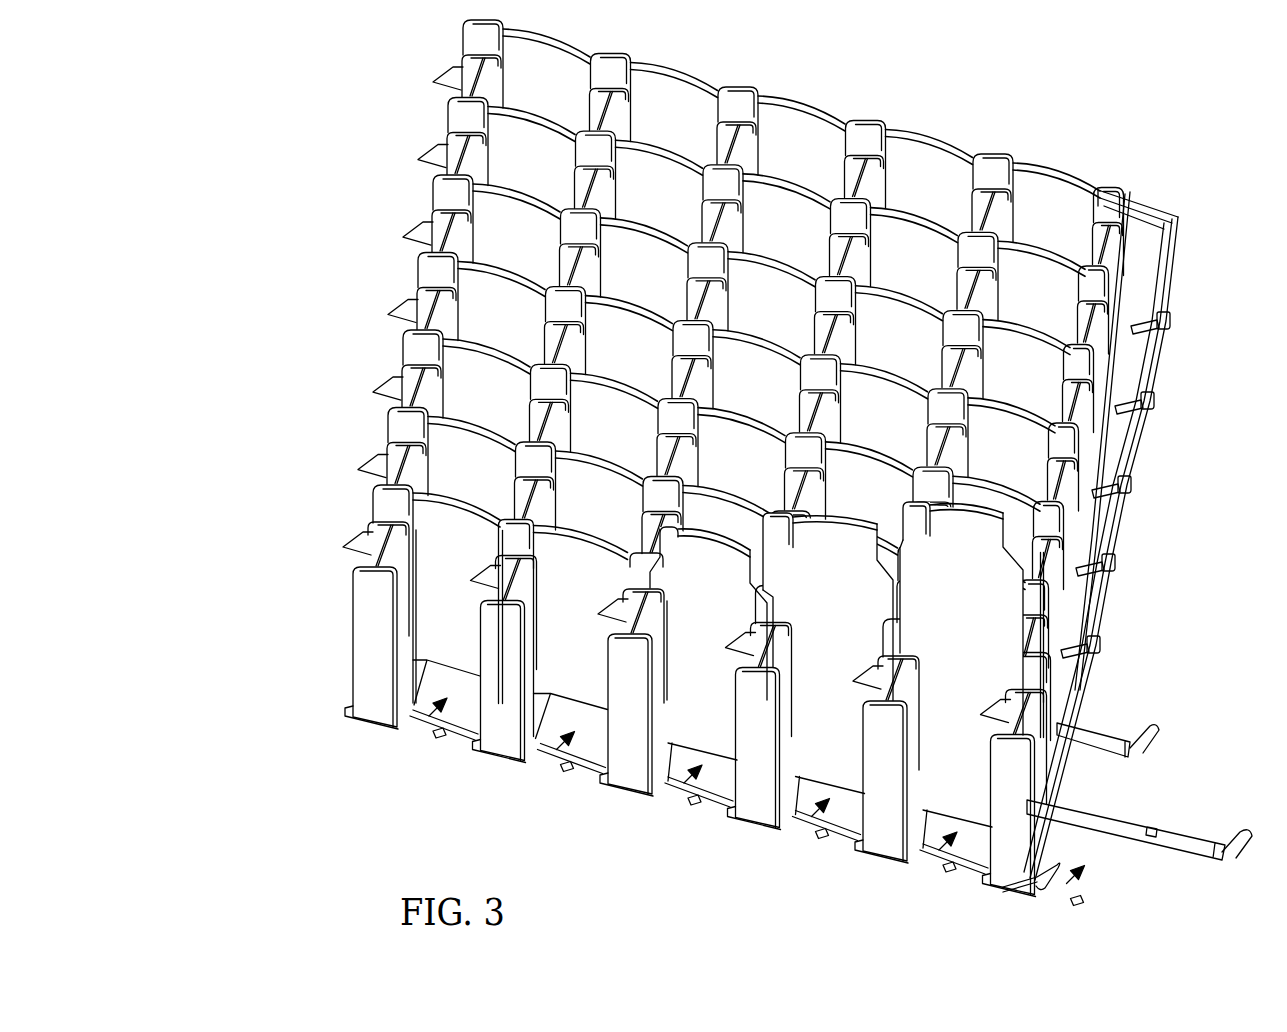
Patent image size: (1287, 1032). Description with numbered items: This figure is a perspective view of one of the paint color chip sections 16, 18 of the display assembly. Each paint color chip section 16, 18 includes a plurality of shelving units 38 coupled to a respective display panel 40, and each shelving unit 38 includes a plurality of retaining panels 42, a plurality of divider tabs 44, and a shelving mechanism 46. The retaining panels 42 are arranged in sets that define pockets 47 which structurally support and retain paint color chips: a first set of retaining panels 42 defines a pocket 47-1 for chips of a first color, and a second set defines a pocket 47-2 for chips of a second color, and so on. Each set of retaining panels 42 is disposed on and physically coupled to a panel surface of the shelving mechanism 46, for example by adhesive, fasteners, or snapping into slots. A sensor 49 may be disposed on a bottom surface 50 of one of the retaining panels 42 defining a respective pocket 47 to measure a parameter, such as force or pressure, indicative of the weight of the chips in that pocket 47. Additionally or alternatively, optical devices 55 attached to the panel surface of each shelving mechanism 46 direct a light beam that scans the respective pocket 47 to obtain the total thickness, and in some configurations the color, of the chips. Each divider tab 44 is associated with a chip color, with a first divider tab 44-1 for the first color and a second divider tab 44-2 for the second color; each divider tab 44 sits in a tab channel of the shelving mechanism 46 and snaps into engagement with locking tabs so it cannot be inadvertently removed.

The paint color chip section 16 is at (766, 481).
The paint color chip section 18 is at (766, 481).
The shelving unit 38 is at (1172, 322).
The display panel 40 is at (1133, 205).
The retaining panel 42 is at (352, 700).
The divider tab 44 is at (455, 518).
The first divider tab 44-1 is at (957, 510).
The second divider tab 44-2 is at (822, 522).
The shelving mechanism 46 is at (1042, 886).
The pocket 47 is at (418, 712).
The pocket 47-1 is at (930, 878).
The pocket 47-2 is at (800, 848).
The sensor 49 is at (382, 717).
The bottom surface 50 is at (755, 830).
The optical device 55 is at (438, 738).